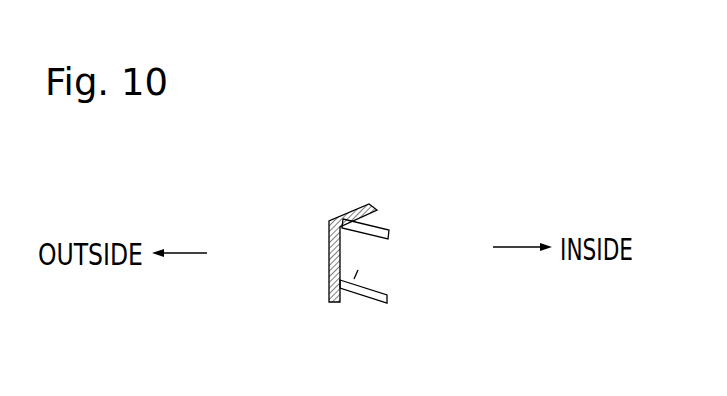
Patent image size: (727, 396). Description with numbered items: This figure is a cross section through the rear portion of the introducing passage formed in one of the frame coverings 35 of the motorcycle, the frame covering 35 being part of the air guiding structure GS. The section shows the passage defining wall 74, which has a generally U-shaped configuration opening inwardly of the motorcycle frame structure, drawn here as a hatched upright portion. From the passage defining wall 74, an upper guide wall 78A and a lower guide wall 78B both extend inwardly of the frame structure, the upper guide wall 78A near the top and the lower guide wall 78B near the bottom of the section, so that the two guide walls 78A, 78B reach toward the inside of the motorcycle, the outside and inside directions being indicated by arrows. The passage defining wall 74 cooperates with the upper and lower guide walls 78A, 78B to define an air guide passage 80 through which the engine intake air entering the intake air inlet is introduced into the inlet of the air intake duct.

The frame covering 35 is at (343, 206).
The passage defining wall 74 is at (332, 242).
The upper guide wall 78A is at (383, 225).
The lower guide wall 78B is at (368, 301).
The air guide passage 80 is at (352, 288).